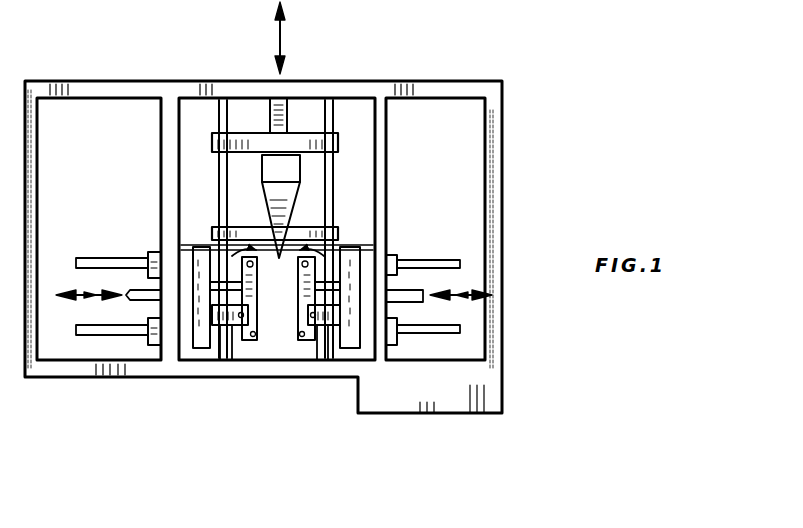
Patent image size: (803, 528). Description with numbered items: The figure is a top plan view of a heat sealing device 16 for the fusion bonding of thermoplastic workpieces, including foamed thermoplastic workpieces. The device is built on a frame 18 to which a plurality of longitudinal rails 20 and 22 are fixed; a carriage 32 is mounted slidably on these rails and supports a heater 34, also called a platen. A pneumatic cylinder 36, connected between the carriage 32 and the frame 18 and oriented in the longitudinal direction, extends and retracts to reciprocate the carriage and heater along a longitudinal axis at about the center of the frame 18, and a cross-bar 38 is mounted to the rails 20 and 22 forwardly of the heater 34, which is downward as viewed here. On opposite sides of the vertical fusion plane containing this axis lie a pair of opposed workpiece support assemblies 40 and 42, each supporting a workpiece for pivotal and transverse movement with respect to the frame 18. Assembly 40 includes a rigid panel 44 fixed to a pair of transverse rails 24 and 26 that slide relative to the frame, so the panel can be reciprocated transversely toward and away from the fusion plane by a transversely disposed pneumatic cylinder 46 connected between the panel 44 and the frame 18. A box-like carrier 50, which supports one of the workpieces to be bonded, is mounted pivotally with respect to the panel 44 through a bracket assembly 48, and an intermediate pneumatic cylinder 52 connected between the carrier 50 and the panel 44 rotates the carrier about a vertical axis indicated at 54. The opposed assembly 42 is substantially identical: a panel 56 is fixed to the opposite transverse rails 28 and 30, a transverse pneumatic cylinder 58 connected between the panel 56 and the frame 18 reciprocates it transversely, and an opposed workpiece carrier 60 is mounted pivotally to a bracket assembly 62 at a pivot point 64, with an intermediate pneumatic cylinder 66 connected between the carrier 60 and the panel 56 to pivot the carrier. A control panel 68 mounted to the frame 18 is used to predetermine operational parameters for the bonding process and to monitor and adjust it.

The heat sealing device 16 is at (126, 62).
The frame 18 is at (505, 114).
The longitudinal rail 20 is at (218, 169).
The longitudinal rail 22 is at (334, 164).
The transverse rail 24 is at (97, 258).
The transverse rail 26 is at (110, 334).
The transverse rail 28 is at (448, 262).
The transverse rail 30 is at (422, 332).
The carriage 32 is at (252, 132).
The heater 34 is at (291, 191).
The pneumatic cylinder 36 is at (292, 119).
The cross-bar 38 is at (342, 229).
The workpiece support assembly 40 is at (236, 420).
The workpiece support assembly 42 is at (297, 418).
The rigid panel 44 is at (205, 344).
The pneumatic cylinder 46 is at (136, 300).
The bracket assembly 48 is at (233, 325).
The carrier 50 is at (292, 285).
The intermediate pneumatic cylinder 52 is at (226, 283).
The vertical axis 54 is at (240, 336).
The panel 56 is at (352, 332).
The transverse pneumatic cylinder 58 is at (410, 293).
The workpiece carrier 60 is at (297, 299).
The bracket assembly 62 is at (338, 322).
The pivot point 64 is at (312, 336).
The intermediate pneumatic cylinder 66 is at (328, 283).
The control panel 68 is at (450, 414).